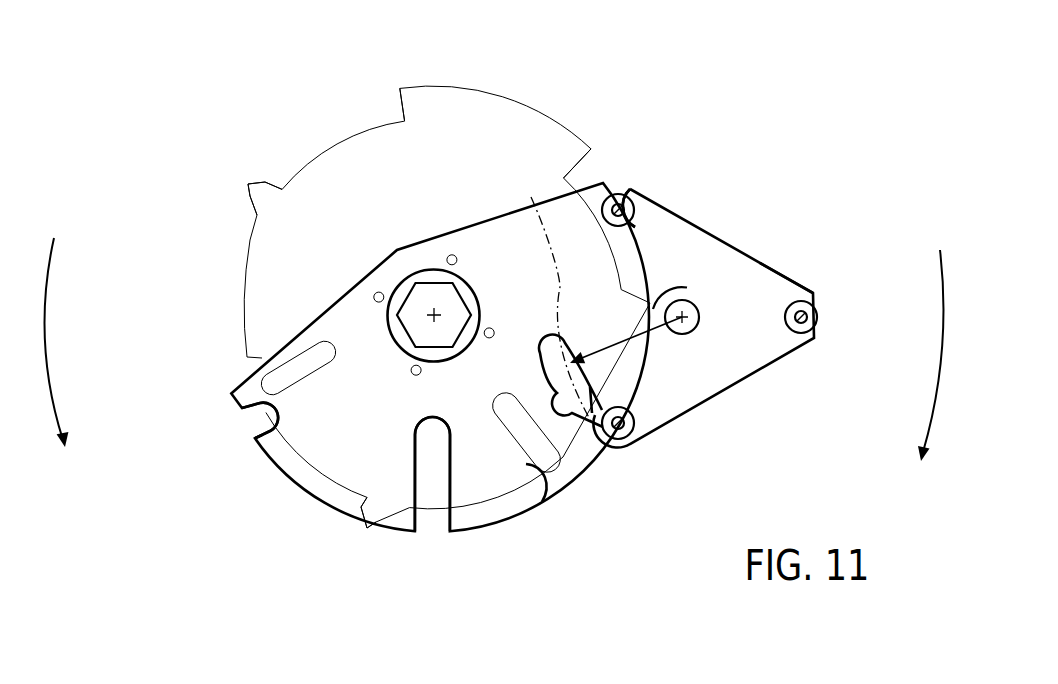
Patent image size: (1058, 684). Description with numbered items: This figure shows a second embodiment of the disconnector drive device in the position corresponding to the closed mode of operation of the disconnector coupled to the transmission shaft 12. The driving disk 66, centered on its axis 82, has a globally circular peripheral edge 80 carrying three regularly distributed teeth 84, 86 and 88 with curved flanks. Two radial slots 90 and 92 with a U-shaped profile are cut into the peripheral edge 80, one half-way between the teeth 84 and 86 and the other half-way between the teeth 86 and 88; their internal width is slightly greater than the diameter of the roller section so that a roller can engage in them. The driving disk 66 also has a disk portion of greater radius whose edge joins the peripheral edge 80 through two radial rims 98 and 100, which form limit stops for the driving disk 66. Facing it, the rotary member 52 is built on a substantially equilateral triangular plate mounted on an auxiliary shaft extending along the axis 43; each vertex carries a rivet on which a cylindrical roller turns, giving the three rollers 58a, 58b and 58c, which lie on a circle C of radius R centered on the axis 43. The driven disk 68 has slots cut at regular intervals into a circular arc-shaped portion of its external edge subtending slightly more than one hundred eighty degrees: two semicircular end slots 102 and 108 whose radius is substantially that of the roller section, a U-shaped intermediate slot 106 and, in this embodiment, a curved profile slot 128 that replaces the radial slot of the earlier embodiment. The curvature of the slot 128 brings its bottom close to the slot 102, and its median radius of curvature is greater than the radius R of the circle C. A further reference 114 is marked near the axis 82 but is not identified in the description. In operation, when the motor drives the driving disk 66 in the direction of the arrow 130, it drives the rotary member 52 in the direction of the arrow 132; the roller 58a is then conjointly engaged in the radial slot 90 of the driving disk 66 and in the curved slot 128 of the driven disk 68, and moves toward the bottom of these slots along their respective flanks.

The transmission shaft 12 is at (470, 293).
The axis 43 is at (795, 284).
The rotary member 52 is at (760, 368).
The roller 58a is at (634, 442).
The pivot pin 58b is at (812, 326).
The pivot pin 58c is at (636, 192).
The driving disk 66 is at (320, 146).
The driven disk 68 is at (300, 498).
The peripheral edge 80 is at (612, 368).
The axis 82 is at (438, 306).
The tooth 84 is at (688, 288).
The tooth 86 is at (363, 535).
The tooth 88 is at (246, 184).
The radial slot 90 is at (540, 500).
The radial slot 92 is at (255, 363).
The radial rim 98 is at (585, 162).
The radial rim 100 is at (397, 97).
The end slot 102 is at (635, 227).
The intermediate slot 106 is at (415, 533).
The end slot 108 is at (255, 437).
The holes 114 is at (412, 292).
The curved profile slot 128 is at (567, 463).
The arrow 130 is at (50, 294).
The arrow 132 is at (943, 260).